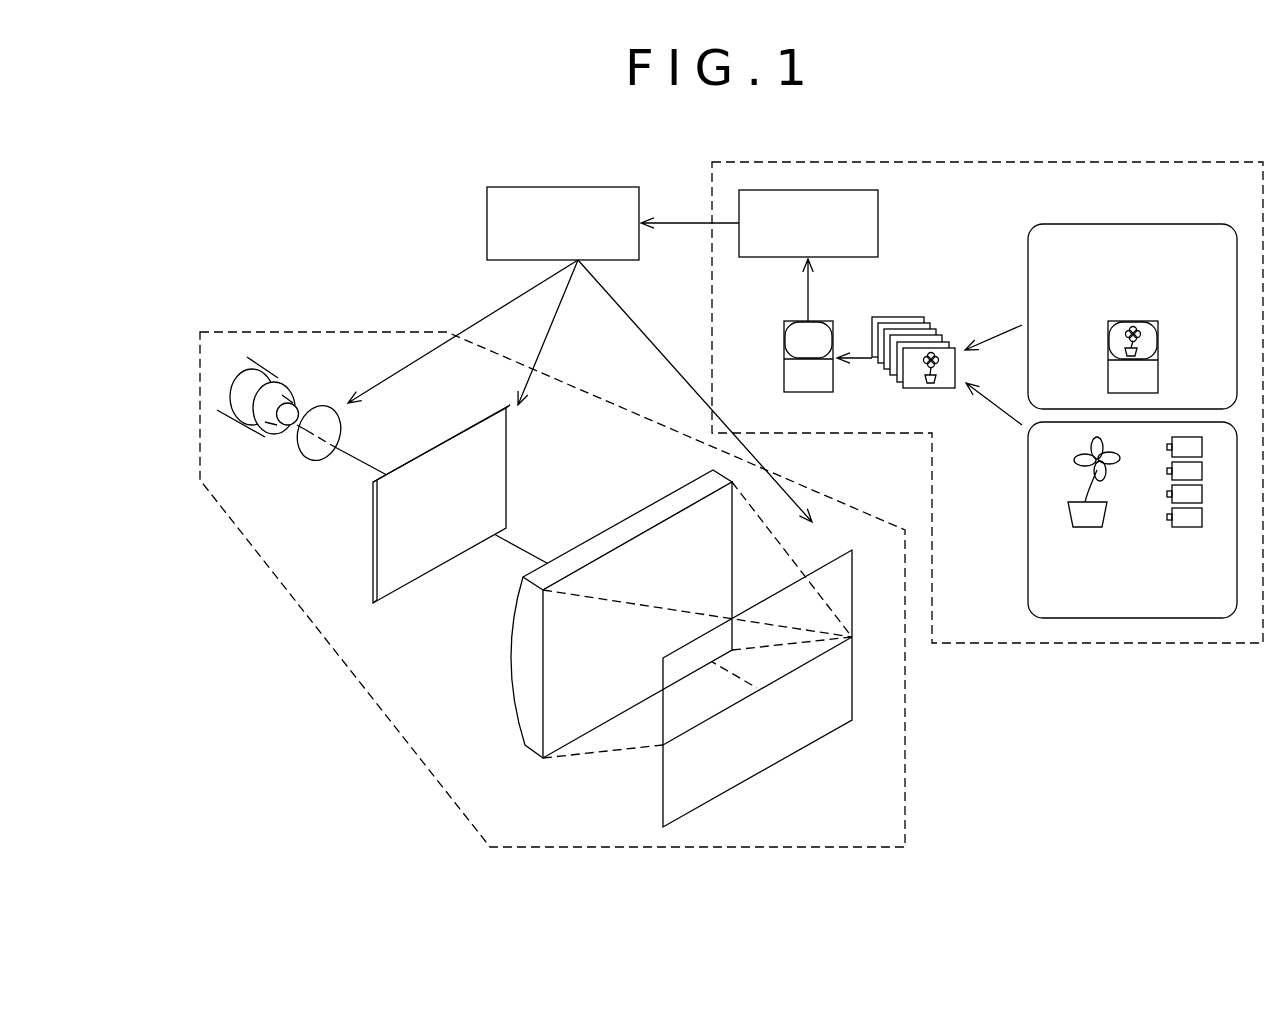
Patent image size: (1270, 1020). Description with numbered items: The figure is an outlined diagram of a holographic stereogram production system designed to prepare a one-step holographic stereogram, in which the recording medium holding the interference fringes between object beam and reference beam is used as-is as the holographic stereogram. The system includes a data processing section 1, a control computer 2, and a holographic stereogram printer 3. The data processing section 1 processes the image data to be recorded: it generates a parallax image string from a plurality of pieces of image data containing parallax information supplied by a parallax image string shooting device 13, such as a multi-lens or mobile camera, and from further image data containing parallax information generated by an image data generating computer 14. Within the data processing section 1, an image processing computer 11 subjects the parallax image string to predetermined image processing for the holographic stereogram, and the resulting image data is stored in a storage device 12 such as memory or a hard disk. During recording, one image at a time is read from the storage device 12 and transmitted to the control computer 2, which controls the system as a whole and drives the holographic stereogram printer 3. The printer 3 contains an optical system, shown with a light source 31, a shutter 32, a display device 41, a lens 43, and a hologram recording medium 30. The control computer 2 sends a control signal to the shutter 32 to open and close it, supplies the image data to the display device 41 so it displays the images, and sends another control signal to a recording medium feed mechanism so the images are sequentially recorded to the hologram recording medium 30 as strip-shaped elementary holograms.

The data processing section 1 is at (1102, 647).
The control computer 2 is at (487, 218).
The holographic stereogram printer 3 is at (906, 727).
The image processing computer 11 is at (784, 340).
The storage device 12 is at (880, 220).
The parallax image string shooting device 13 is at (1028, 488).
The image data generating computer 14 is at (1137, 224).
The hologram recording medium 30 is at (787, 747).
The light source 31 is at (257, 428).
The shutter 32 is at (312, 461).
The display device 41 is at (437, 567).
The projection lens 43 is at (513, 703).